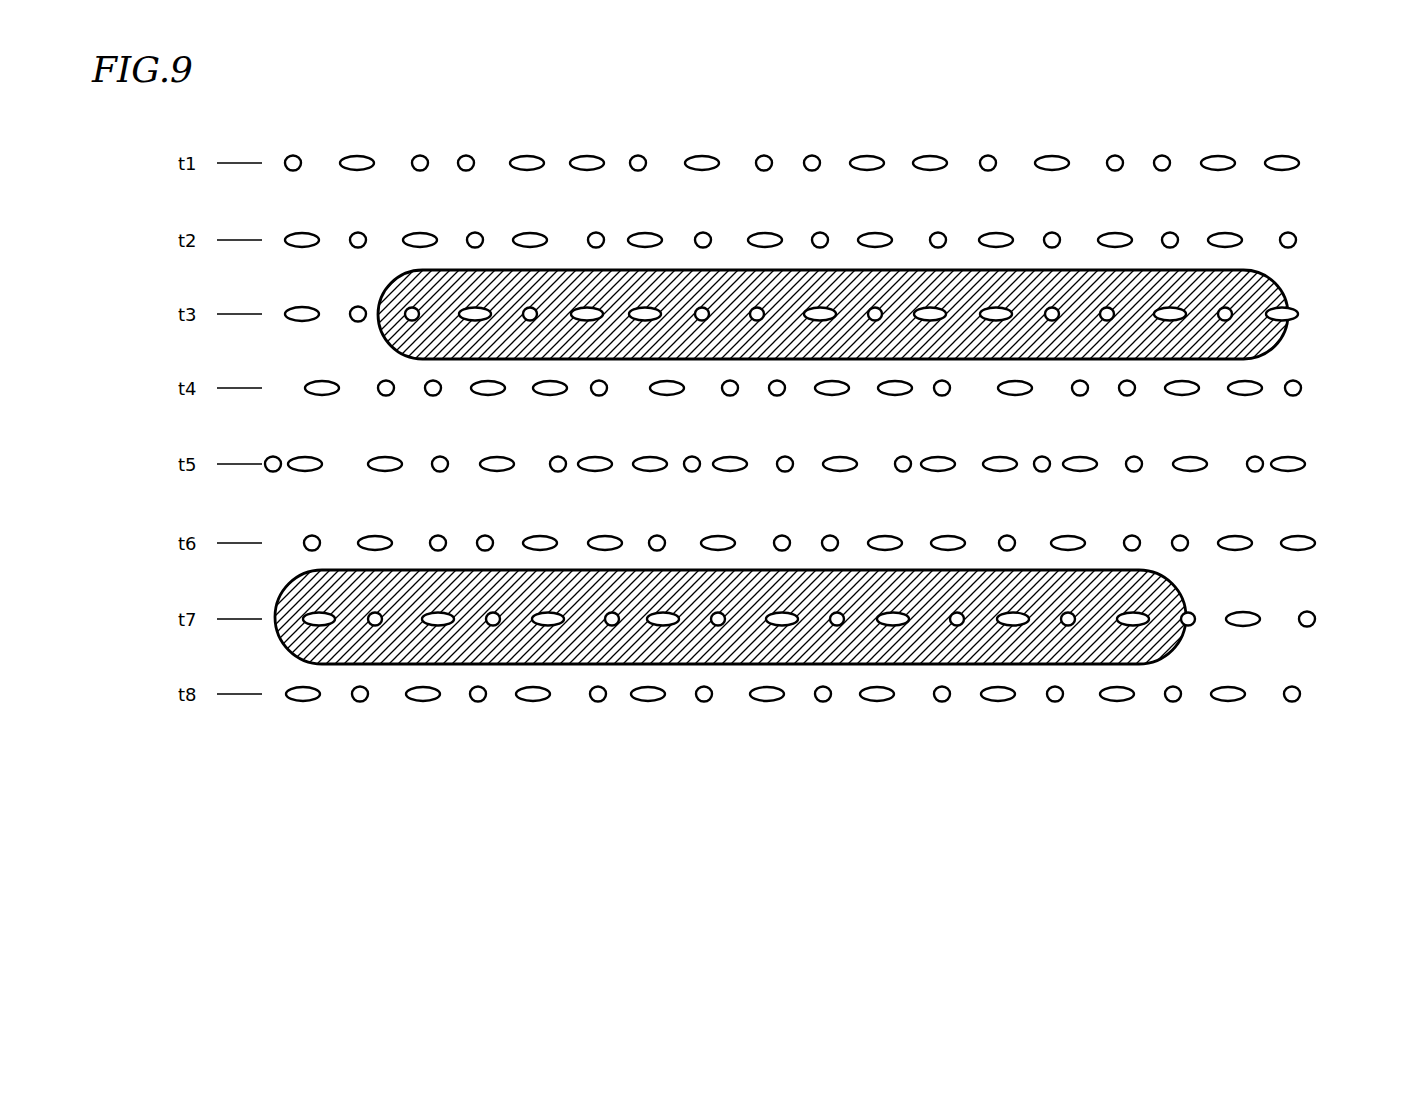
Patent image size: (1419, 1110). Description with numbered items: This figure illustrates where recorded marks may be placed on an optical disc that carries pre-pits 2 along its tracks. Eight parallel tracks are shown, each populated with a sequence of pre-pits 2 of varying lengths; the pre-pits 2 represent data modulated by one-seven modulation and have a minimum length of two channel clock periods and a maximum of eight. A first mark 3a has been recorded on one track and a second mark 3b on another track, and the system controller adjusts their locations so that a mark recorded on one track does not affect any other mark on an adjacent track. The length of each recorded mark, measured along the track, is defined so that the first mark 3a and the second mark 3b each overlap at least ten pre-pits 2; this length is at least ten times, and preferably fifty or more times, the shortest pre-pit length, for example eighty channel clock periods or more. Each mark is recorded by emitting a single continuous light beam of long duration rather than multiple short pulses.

The pre-pit 2 is at (1318, 617).
The first mark 3a is at (1125, 640).
The second mark 3b is at (1005, 271).